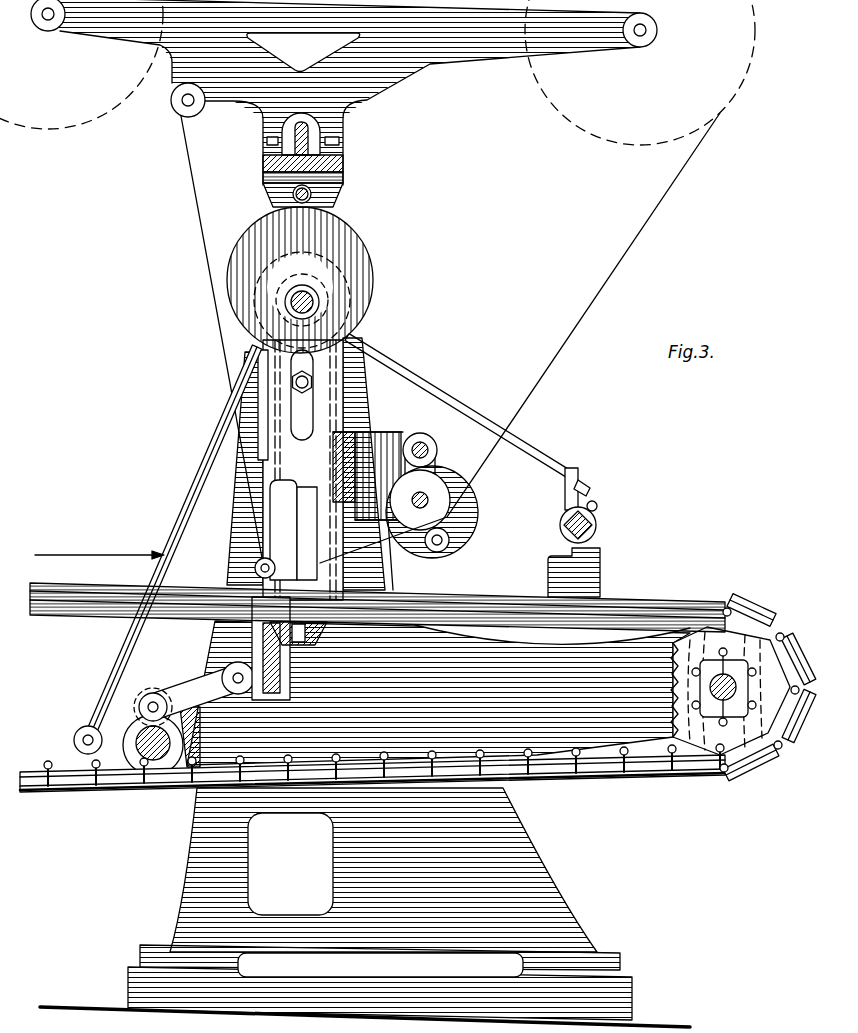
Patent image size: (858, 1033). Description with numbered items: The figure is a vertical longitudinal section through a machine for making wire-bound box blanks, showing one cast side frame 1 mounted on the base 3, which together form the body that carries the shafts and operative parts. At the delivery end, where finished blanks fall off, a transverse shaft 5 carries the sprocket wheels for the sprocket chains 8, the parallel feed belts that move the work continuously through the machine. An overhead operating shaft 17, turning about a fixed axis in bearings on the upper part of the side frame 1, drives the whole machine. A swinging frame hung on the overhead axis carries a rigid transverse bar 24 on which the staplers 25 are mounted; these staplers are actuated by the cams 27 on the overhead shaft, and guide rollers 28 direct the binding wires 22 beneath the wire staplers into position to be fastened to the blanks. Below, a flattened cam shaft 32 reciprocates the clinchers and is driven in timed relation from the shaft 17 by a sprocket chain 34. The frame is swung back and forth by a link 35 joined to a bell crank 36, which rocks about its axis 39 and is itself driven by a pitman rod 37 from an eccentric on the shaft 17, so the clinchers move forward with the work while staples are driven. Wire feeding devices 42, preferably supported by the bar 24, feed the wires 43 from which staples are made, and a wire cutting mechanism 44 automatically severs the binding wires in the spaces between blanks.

The side frame 1 is at (533, 893).
The base 3 is at (632, 1010).
The transverse shaft 5 is at (720, 722).
The sprocket chains 8 is at (100, 584).
The overhead operating shaft 17 is at (312, 298).
The binding wires 22 is at (225, 378).
The transverse bar 24 is at (356, 446).
The staplers 25 is at (285, 500).
The cams 27 is at (352, 242).
The guide rollers 28 is at (257, 560).
The cam shaft 32 is at (280, 628).
The sprocket chain 34 is at (262, 353).
The link 35 is at (192, 684).
The bell crank 36 is at (110, 730).
The pitman rod 37 is at (215, 452).
The axis 39 is at (160, 757).
The wire feeding devices 42 is at (449, 495).
The wires 43 is at (598, 292).
The wire cutting mechanism 44 is at (597, 525).